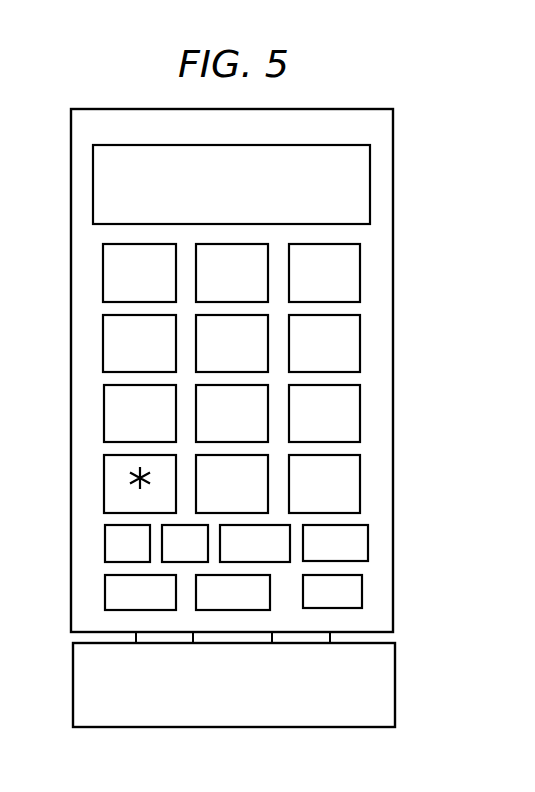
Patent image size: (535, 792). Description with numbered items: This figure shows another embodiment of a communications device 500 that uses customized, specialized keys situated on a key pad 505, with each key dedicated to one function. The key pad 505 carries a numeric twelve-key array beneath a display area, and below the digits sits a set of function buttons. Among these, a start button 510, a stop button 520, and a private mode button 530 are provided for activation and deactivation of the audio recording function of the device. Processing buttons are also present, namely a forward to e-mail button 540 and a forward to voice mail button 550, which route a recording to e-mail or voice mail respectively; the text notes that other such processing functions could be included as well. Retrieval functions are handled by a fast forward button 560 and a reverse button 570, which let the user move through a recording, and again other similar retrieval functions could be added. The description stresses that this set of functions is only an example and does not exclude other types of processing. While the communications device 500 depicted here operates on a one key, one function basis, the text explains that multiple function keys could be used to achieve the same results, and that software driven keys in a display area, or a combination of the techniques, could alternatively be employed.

The communications device 500 is at (351, 94).
The key pad 505 is at (88, 257).
The start button 510 is at (105, 546).
The stop button 520 is at (162, 562).
The private mode button 530 is at (290, 562).
The forward to e-mail button 540 is at (105, 598).
The forward to voice mail button 550 is at (273, 610).
The fast forward button 560 is at (368, 540).
The reverse button 570 is at (362, 591).